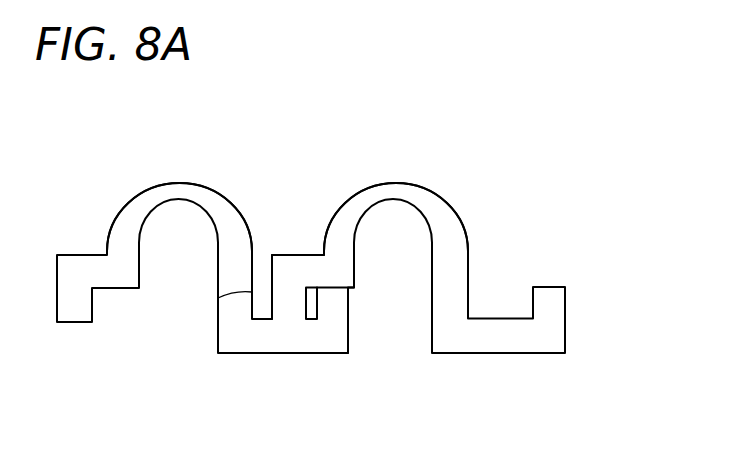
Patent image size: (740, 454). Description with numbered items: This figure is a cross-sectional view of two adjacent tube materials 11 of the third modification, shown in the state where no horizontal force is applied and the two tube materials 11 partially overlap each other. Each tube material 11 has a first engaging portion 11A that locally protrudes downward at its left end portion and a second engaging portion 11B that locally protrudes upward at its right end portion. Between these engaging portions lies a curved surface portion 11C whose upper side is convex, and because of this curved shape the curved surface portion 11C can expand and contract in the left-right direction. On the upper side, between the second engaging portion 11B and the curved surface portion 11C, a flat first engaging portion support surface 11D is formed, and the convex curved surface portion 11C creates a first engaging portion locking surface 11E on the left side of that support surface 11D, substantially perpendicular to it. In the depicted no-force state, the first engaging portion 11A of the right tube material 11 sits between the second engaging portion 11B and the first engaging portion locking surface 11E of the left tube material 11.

The tube material 11 is at (283, 353).
The first engaging portion 11A is at (292, 300).
The second engaging portion 11B is at (337, 302).
The curved surface portion 11C is at (178, 183).
The first engaging portion support surface 11D is at (308, 319).
The first engaging portion locking surface 11E is at (218, 298).